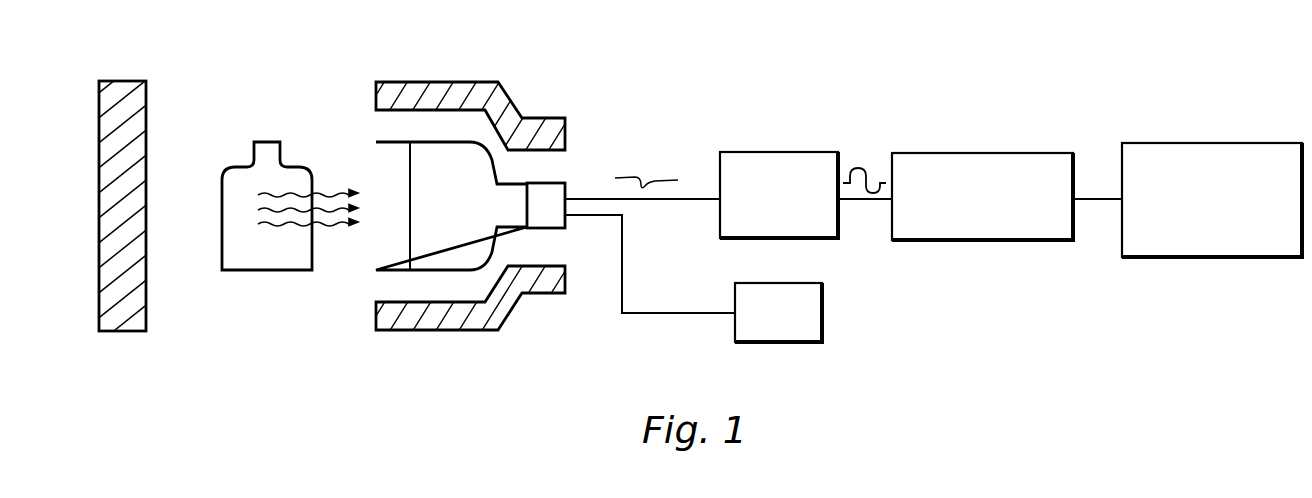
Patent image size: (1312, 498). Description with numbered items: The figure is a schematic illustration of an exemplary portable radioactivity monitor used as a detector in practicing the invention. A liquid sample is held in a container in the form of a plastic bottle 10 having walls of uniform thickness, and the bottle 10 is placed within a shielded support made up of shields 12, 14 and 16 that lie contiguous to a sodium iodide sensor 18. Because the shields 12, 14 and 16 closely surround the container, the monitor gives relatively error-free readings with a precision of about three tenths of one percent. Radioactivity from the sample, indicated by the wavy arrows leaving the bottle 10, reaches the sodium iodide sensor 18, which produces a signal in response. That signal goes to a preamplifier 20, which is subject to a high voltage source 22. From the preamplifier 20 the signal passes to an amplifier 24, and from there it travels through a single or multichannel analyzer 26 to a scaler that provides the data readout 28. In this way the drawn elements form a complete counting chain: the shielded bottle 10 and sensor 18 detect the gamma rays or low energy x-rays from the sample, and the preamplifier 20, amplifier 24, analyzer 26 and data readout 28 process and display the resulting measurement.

The plastic bottle 10 is at (280, 162).
The shield 12 is at (119, 80).
The shield 14 is at (503, 102).
The shield 16 is at (400, 324).
The sodium iodide sensor 18 is at (386, 265).
The preamplifier 20 is at (555, 187).
The high voltage source 22 is at (815, 322).
The amplifier 24 is at (760, 160).
The single or multichannel analyzer 26 is at (997, 228).
The data readout 28 is at (1198, 247).